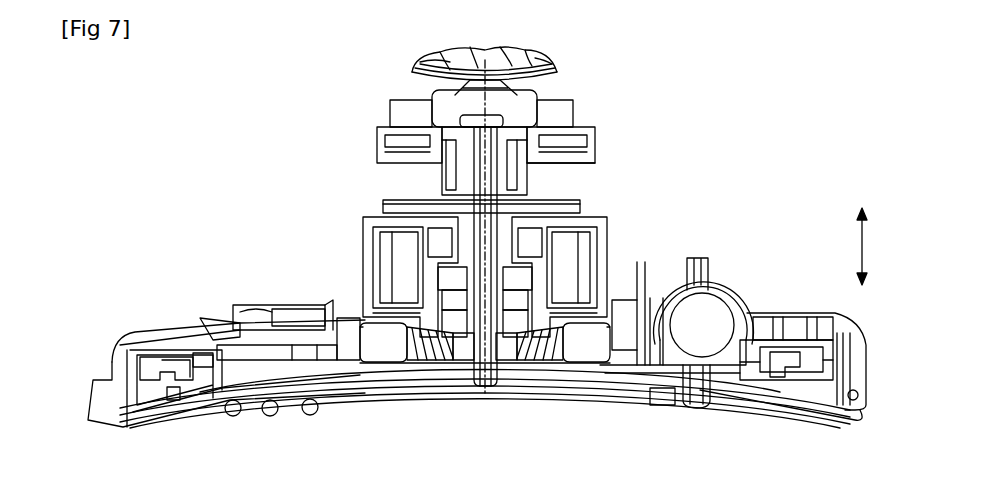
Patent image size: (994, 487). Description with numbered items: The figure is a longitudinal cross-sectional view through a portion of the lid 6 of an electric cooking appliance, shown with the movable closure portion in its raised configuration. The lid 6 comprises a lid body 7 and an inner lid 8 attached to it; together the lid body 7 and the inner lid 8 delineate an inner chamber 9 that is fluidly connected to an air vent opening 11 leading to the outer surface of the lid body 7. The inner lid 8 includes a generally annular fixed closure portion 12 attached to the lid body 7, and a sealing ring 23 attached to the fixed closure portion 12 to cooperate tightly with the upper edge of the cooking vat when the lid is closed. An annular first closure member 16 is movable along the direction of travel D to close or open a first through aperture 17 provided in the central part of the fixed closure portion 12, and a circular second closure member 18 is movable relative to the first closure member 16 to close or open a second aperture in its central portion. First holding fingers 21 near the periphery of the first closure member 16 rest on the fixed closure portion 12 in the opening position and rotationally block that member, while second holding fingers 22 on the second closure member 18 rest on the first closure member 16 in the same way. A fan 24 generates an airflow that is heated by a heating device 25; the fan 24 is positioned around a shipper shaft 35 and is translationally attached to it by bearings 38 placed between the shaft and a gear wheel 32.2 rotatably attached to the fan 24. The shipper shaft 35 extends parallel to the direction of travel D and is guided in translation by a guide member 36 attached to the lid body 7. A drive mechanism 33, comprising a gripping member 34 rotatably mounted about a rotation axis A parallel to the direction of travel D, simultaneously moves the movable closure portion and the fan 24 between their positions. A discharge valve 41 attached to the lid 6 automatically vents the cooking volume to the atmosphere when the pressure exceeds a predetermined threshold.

The rotation axis A is at (478, 112).
The direction of travel D is at (869, 246).
The lid 6 is at (210, 262).
The lid body 7 is at (365, 280).
The inner lid 8 is at (222, 388).
The inner chamber 9 is at (520, 320).
The air vent opening 11 is at (645, 307).
The fixed closure portion 12 is at (740, 385).
The first closure member 16 is at (385, 395).
The first through aperture 17 is at (330, 322).
The second closure member 18 is at (530, 387).
The first holding fingers 21 is at (652, 394).
The second holding fingers 22 is at (440, 388).
The sealing ring 23 is at (790, 400).
The fan 24 is at (598, 387).
The heating device 25 is at (308, 405).
The gear wheel 32.2 is at (365, 238).
The drive mechanism 33 is at (558, 172).
The gripping member 34 is at (548, 130).
The shipper shaft 35 is at (466, 188).
The guide member 36 is at (445, 230).
The bearings 38 is at (518, 278).
The discharge valve 41 is at (716, 312).